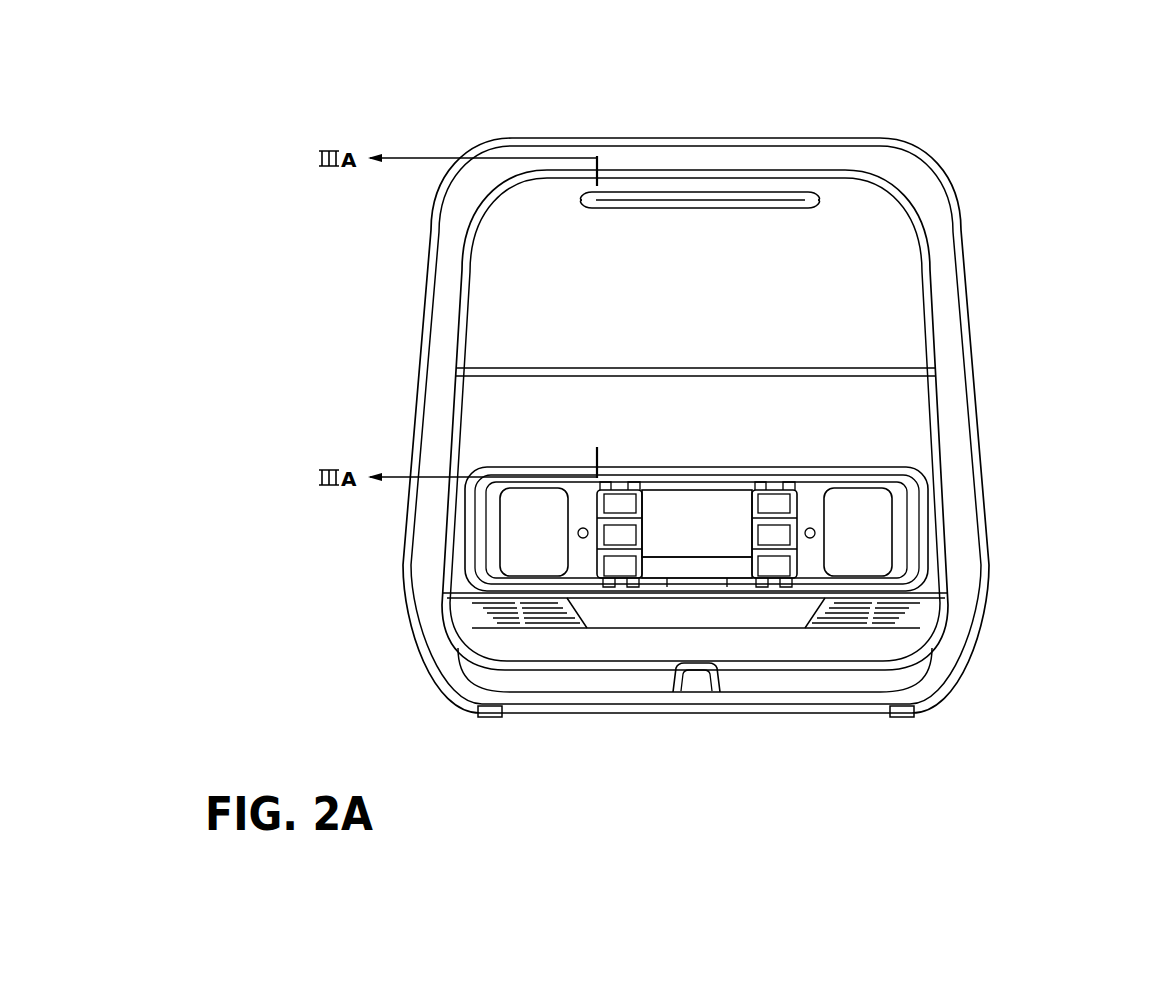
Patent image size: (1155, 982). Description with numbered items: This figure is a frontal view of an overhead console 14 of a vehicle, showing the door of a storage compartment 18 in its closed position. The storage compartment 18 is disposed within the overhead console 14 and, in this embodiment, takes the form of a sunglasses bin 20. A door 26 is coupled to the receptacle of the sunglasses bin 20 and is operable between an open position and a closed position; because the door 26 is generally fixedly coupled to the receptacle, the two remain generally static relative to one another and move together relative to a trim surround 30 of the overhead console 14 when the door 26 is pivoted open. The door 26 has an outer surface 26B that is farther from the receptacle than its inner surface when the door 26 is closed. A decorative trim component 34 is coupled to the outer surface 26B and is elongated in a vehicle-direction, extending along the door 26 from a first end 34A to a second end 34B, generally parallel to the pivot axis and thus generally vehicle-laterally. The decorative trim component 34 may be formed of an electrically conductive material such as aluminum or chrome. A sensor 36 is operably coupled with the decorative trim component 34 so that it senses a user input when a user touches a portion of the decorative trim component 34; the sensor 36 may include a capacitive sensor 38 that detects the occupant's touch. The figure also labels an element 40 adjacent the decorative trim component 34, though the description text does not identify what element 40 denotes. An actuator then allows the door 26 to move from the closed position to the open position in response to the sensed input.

The overhead console 14 is at (935, 150).
The storage compartment 18 is at (850, 163).
The sunglasses bin 20 is at (892, 231).
The door 26 is at (815, 283).
The outer surface 26B is at (853, 323).
The trim surround 30 is at (447, 238).
The decorative trim component 34 is at (750, 192).
The first end 34A is at (582, 199).
The second end 34B is at (812, 203).
The sensor 36 is at (686, 180).
The capacitive sensor 38 is at (657, 192).
The bezel opening 40 is at (622, 168).